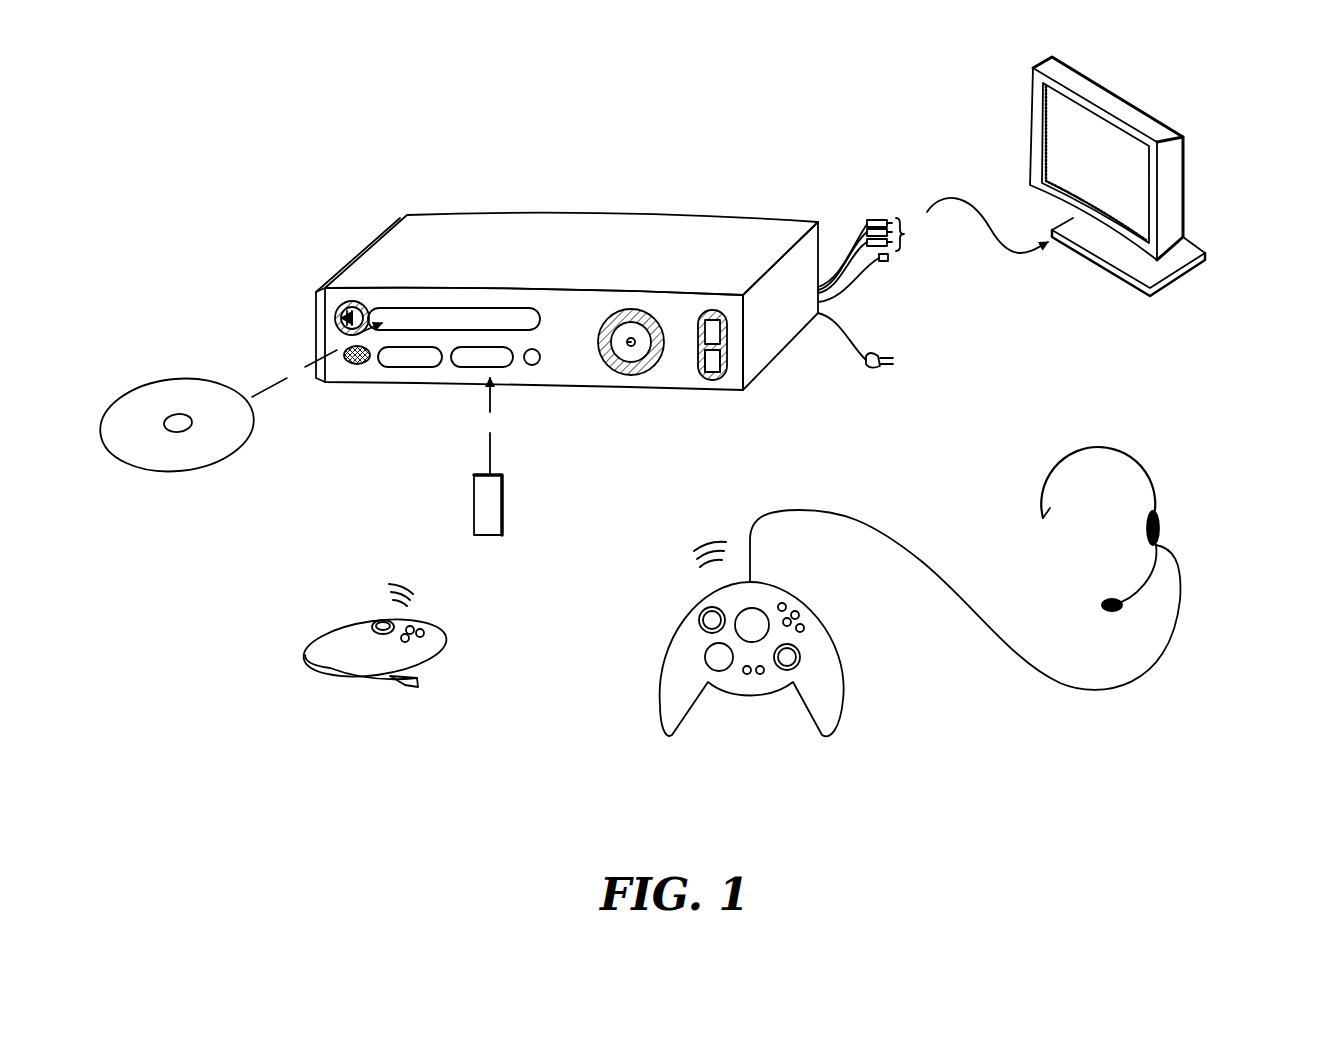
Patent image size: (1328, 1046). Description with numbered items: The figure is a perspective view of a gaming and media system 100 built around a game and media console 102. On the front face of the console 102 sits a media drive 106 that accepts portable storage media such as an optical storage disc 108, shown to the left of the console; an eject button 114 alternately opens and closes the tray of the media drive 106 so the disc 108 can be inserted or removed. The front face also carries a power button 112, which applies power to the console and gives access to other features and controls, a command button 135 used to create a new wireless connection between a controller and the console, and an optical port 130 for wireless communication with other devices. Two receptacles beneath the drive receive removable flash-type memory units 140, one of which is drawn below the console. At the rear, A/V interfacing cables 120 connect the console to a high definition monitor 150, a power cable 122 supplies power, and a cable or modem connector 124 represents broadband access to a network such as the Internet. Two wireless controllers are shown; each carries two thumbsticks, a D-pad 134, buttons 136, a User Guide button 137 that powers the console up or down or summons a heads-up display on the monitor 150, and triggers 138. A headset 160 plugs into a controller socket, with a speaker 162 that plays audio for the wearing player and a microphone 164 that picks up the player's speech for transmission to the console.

The gaming and media system 100 is at (599, 181).
The game and media console 102 is at (442, 227).
The media drive 106 is at (460, 308).
The optical storage disc 108 is at (185, 472).
The power button 112 is at (631, 376).
The eject button 114 is at (350, 318).
The A/V interfacing cables 120 is at (870, 221).
The power cable 122 is at (866, 364).
The cable or modem connector 124 is at (886, 262).
The optical port 130 is at (355, 366).
The D-pad 134 is at (705, 655).
The command button 135 is at (531, 366).
The buttons 136 is at (797, 614).
The User Guide button 137 is at (755, 607).
The triggers 138 is at (415, 689).
The memory unit 140 is at (488, 536).
The high definition monitor 150 is at (1032, 132).
The headset 160 is at (1147, 472).
The speaker 162 is at (1158, 527).
The microphone 164 is at (1108, 600).